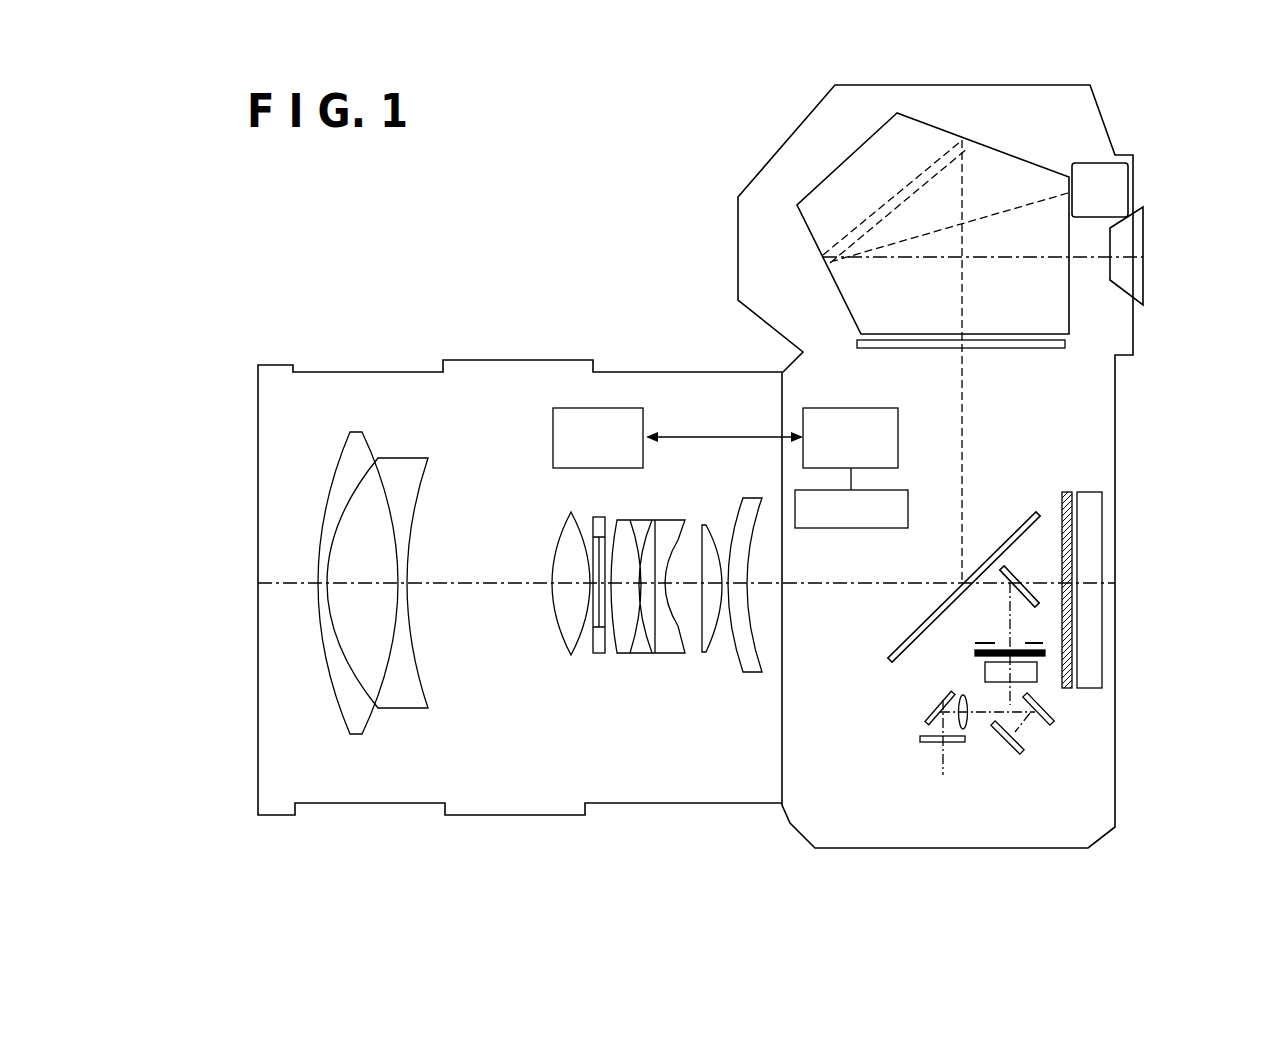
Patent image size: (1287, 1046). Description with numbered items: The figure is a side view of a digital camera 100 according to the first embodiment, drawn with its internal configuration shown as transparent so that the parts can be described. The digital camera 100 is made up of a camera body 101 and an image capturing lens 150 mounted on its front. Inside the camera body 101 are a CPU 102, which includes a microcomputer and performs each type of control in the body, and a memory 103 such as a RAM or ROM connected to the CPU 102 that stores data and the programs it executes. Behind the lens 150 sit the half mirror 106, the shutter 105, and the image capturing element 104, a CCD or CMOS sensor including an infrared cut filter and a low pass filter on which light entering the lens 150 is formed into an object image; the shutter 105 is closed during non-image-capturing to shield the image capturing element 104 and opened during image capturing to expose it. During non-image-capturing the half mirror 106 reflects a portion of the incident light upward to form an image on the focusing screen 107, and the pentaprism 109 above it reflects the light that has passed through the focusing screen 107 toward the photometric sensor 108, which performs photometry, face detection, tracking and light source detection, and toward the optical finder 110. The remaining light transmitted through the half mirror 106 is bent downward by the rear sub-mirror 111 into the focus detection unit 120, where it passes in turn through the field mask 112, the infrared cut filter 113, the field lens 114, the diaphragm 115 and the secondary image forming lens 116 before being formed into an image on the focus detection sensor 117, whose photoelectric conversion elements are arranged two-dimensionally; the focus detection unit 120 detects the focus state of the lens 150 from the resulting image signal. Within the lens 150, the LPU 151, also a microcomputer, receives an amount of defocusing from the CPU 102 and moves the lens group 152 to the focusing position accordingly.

The digital camera 100 is at (674, 124).
The camera body 101 is at (1082, 832).
The CPU 102 is at (853, 408).
The memory 103 is at (851, 528).
The image capturing element 104 is at (1102, 510).
The shutter 105 is at (1072, 551).
The half mirror 106 is at (1027, 522).
The focusing screen 107 is at (1038, 348).
The photometric sensor 108 is at (1128, 183).
The pentaprism 109 is at (838, 165).
The optical finder 110 is at (1140, 233).
The sub-mirror 111 is at (1037, 597).
The field mask 112 is at (1030, 643).
The infrared cut filter 113 is at (1045, 653).
The field lens 114 is at (1037, 672).
The diaphragm 115 is at (972, 702).
The secondary image forming lens 116 is at (965, 725).
The focus detection sensor 117 is at (958, 745).
The focus detection unit 120 is at (1091, 708).
The lens 150 is at (520, 617).
The LPU 151 is at (553, 437).
The lens group 152 is at (643, 655).